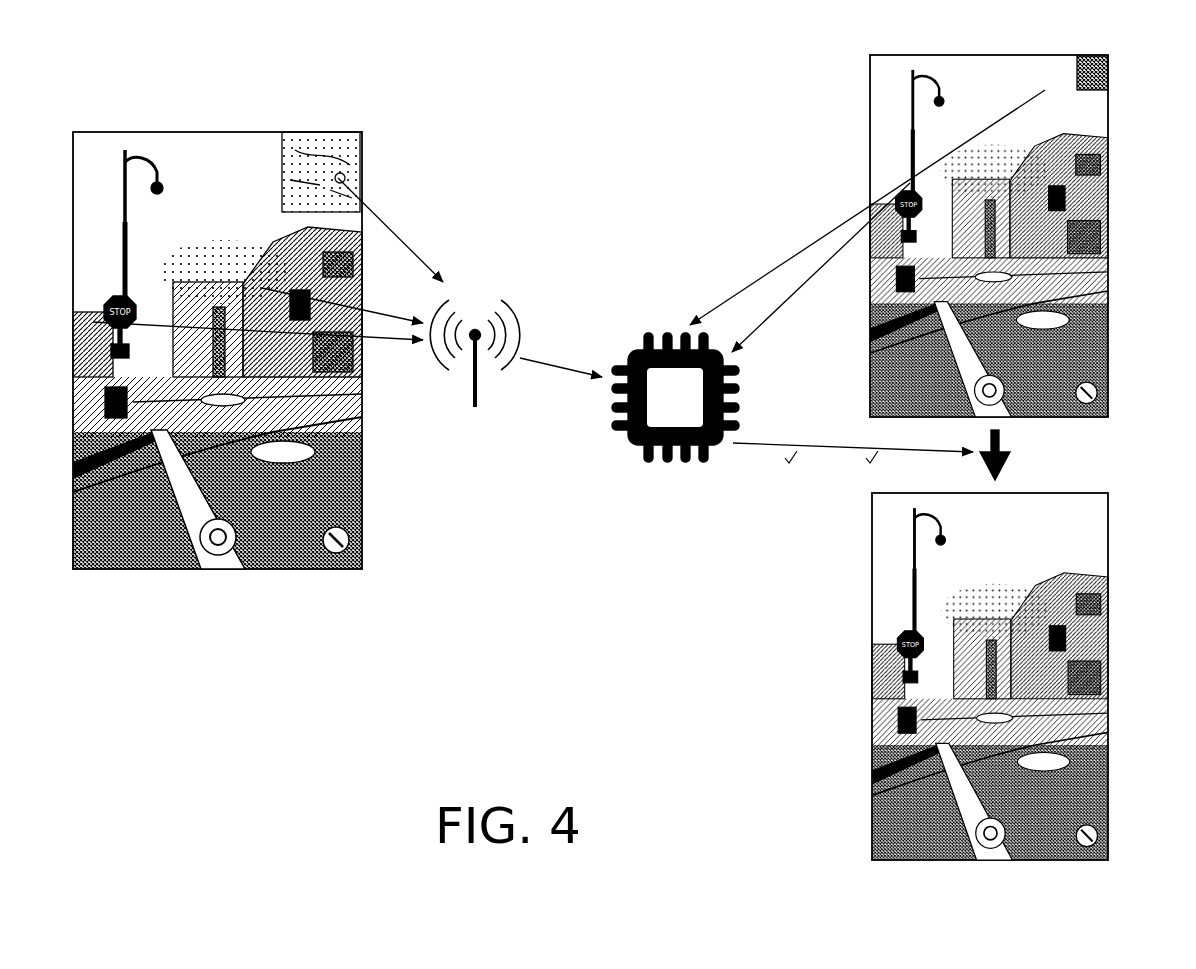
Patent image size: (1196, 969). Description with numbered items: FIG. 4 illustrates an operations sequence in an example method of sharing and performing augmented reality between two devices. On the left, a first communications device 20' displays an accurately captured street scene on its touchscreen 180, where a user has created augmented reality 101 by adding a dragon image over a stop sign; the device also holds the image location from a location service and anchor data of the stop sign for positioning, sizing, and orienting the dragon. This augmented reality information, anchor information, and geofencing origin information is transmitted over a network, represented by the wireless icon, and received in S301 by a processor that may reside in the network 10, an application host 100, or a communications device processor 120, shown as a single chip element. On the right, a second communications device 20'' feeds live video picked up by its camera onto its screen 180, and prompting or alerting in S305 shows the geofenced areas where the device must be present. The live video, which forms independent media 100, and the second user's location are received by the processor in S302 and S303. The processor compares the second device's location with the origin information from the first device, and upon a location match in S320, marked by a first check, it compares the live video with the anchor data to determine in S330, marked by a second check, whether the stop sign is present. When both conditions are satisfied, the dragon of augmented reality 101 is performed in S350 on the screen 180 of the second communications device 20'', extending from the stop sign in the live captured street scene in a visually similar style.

The network 10 is at (708, 345).
The application host 100 is at (708, 345).
The communications device processor 120 is at (630, 444).
The augmented reality 101 is at (155, 258).
The touchscreen 180 is at (213, 132).
The first communications device 20' is at (217, 368).
The second communications device 20'' is at (969, 458).
The transmitting and receiving augmented reality information S301 is at (397, 330).
The receiving limitation information and comparing location S302 is at (823, 282).
The receiving independent media S303 is at (744, 296).
The prompting or alerting S305 is at (1082, 91).
The location match determination S320 is at (757, 447).
The anchor presence determination S330 is at (818, 448).
The performing augmented reality S350 is at (1010, 466).